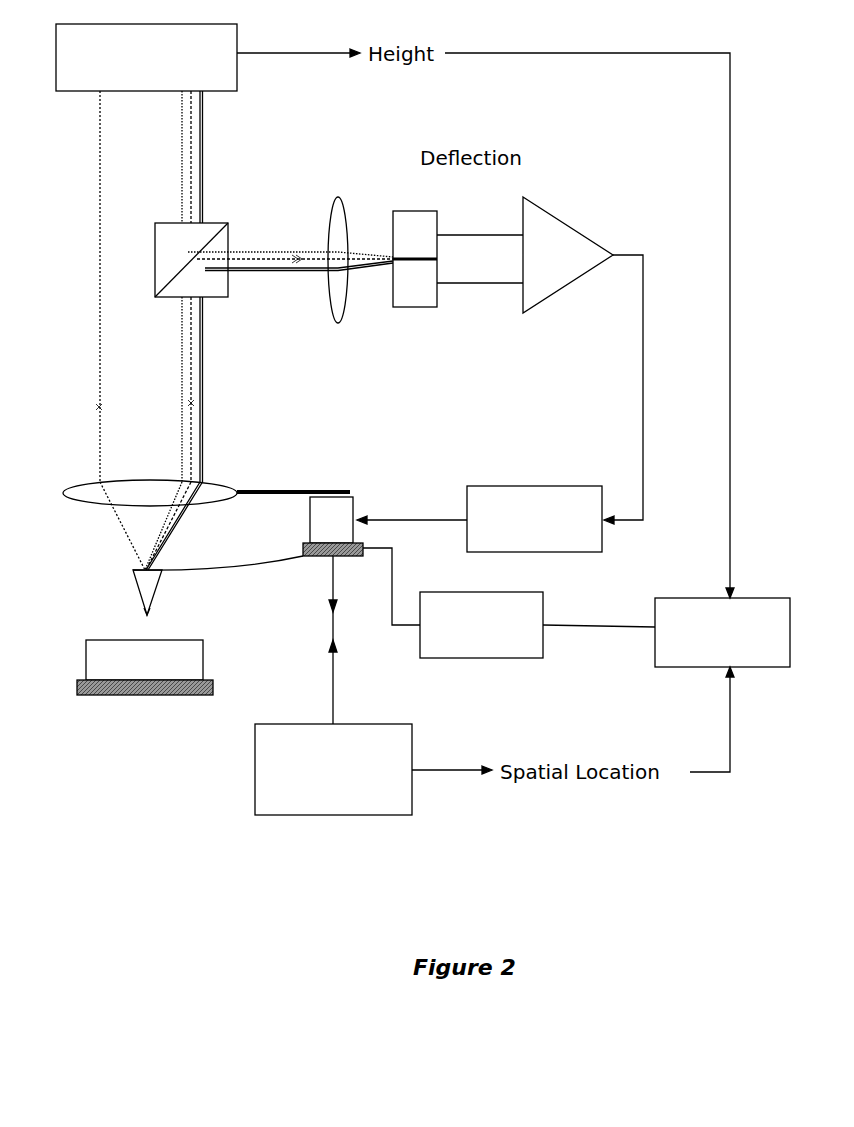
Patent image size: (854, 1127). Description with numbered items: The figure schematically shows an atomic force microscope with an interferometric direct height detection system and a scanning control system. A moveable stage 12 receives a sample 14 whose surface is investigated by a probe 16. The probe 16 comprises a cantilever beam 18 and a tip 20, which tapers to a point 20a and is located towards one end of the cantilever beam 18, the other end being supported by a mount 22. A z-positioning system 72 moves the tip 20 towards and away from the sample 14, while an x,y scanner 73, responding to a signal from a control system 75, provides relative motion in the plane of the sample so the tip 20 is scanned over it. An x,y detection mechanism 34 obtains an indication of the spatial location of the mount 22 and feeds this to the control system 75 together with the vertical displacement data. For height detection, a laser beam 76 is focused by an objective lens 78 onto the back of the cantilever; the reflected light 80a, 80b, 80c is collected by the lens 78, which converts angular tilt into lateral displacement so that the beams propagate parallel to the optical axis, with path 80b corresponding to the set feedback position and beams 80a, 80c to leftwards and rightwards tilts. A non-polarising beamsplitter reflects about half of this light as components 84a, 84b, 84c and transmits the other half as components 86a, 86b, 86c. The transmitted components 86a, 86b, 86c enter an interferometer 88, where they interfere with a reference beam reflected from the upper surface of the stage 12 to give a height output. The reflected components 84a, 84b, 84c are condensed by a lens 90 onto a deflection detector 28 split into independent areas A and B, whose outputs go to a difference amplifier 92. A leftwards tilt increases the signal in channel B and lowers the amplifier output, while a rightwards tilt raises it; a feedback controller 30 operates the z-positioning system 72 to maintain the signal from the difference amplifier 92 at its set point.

The moveable stage 12 is at (75, 688).
The sample 14 is at (82, 661).
The probe 16 is at (258, 572).
The cantilever beam 18 is at (210, 571).
The tip 20 is at (142, 591).
The point 20a is at (142, 615).
The mount 22 is at (354, 558).
The deflection detector 28 is at (421, 309).
The feedback controller 30 is at (604, 548).
The x,y detection mechanism 34 is at (300, 815).
The z-positioning system 72 is at (356, 498).
The x,y scanner 73 is at (495, 660).
The control system 75 is at (670, 668).
The laser beam 76 is at (100, 171).
The objective lens 78 is at (63, 495).
The reflected beam 80a is at (182, 340).
The reflected beam 80b is at (191, 375).
The reflected beam 80c is at (203, 417).
The reflected component 84a is at (248, 272).
The reflected component 84b is at (275, 260).
The reflected component 84c is at (278, 250).
The transmitted component 86a is at (182, 179).
The transmitted component 86b is at (190, 153).
The transmitted component 86c is at (204, 142).
The interferometer 88 is at (237, 74).
The lens 90 is at (343, 205).
The difference amplifier 92 is at (572, 225).